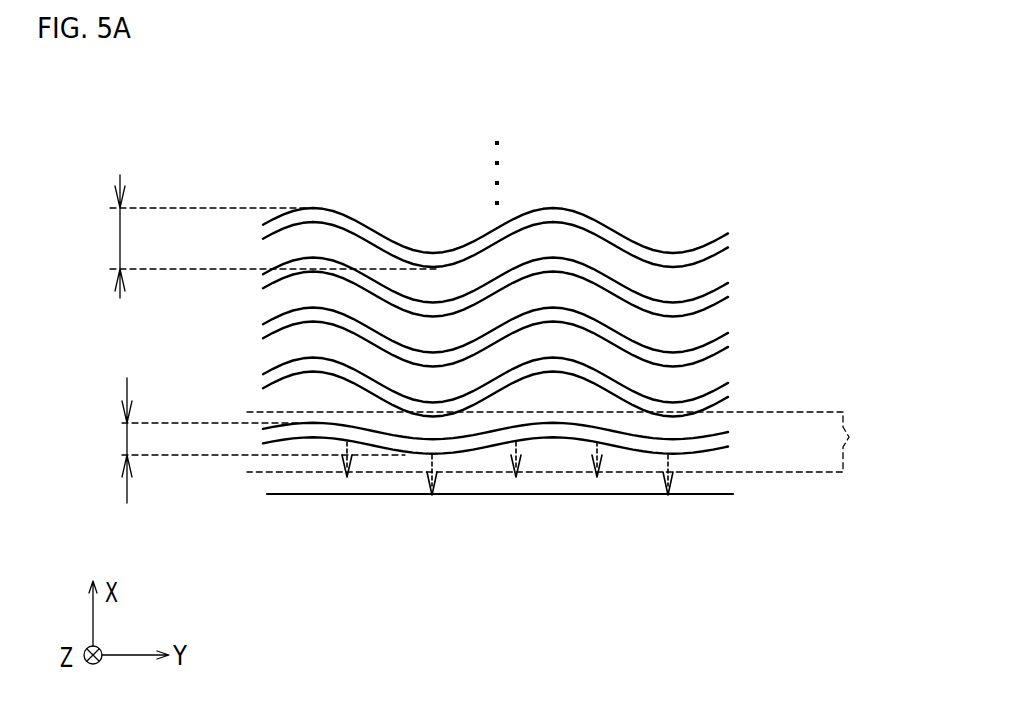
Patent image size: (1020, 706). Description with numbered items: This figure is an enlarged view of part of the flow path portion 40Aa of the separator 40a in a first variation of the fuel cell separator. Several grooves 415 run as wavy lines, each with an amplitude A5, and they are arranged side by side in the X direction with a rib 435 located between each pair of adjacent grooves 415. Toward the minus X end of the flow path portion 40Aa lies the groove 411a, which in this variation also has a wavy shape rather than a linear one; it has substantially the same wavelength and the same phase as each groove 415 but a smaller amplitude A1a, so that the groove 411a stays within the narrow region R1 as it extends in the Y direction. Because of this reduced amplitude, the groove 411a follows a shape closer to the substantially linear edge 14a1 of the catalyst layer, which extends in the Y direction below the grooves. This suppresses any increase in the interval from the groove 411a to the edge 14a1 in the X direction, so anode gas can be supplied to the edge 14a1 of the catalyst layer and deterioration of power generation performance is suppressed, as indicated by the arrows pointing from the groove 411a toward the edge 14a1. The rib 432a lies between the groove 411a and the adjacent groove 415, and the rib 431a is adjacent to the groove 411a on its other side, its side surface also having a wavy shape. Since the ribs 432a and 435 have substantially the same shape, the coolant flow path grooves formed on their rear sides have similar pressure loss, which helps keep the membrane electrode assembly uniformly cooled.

The separator 40a is at (760, 171).
The flow path portion 40Aa is at (852, 241).
The groove 415 is at (730, 233).
The rib 435 is at (270, 249).
The rib 432a is at (280, 402).
The groove 411a is at (732, 434).
The rib 431a is at (280, 487).
The edge of the catalyst layer 14a1 is at (445, 496).
The amplitude of the groove 415 A5 is at (260, 236).
The amplitude of the groove 411a A1a is at (240, 440).
The region R1 is at (561, 442).